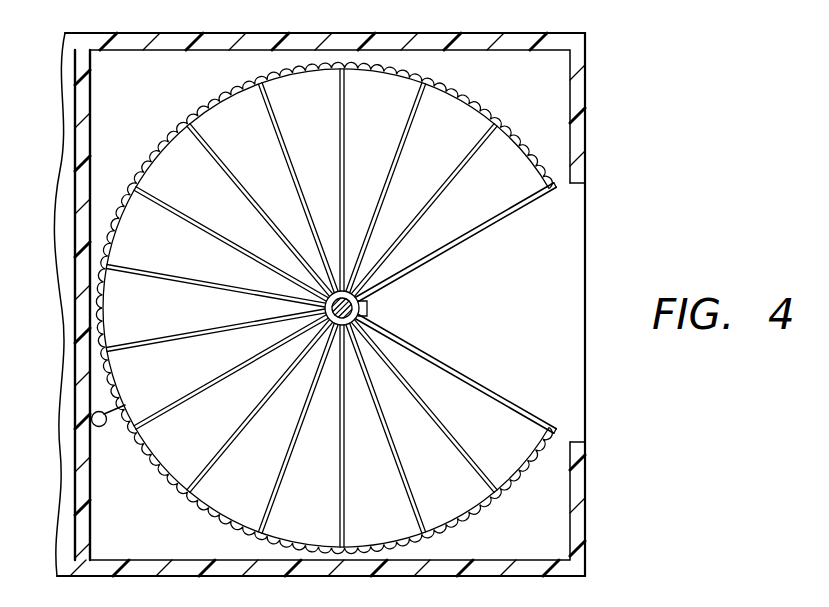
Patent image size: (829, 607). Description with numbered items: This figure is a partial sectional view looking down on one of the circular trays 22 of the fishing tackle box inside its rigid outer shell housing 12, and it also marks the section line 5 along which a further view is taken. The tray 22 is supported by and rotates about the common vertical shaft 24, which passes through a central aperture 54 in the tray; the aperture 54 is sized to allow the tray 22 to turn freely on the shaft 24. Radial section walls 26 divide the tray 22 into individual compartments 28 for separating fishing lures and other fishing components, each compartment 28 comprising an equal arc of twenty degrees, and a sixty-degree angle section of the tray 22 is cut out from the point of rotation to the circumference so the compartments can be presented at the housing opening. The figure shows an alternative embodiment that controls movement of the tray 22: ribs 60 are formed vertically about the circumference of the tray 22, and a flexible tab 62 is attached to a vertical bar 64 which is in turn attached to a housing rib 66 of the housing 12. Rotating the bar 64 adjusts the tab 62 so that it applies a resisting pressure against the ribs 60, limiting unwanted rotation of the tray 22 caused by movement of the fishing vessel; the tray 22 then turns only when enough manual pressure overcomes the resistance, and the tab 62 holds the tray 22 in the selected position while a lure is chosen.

The housing 12 is at (585, 570).
The circular tray 22 is at (365, 280).
The vertical shaft 24 is at (360, 304).
The section wall 26 is at (508, 215).
The compartment 28 is at (500, 200).
The aperture 54 is at (367, 316).
The rib 60 is at (458, 86).
The flexible tab 62 is at (124, 413).
The vertical bar 64 is at (93, 423).
The housing rib 66 is at (85, 395).
The section line 5- 5 is at (324, 308).